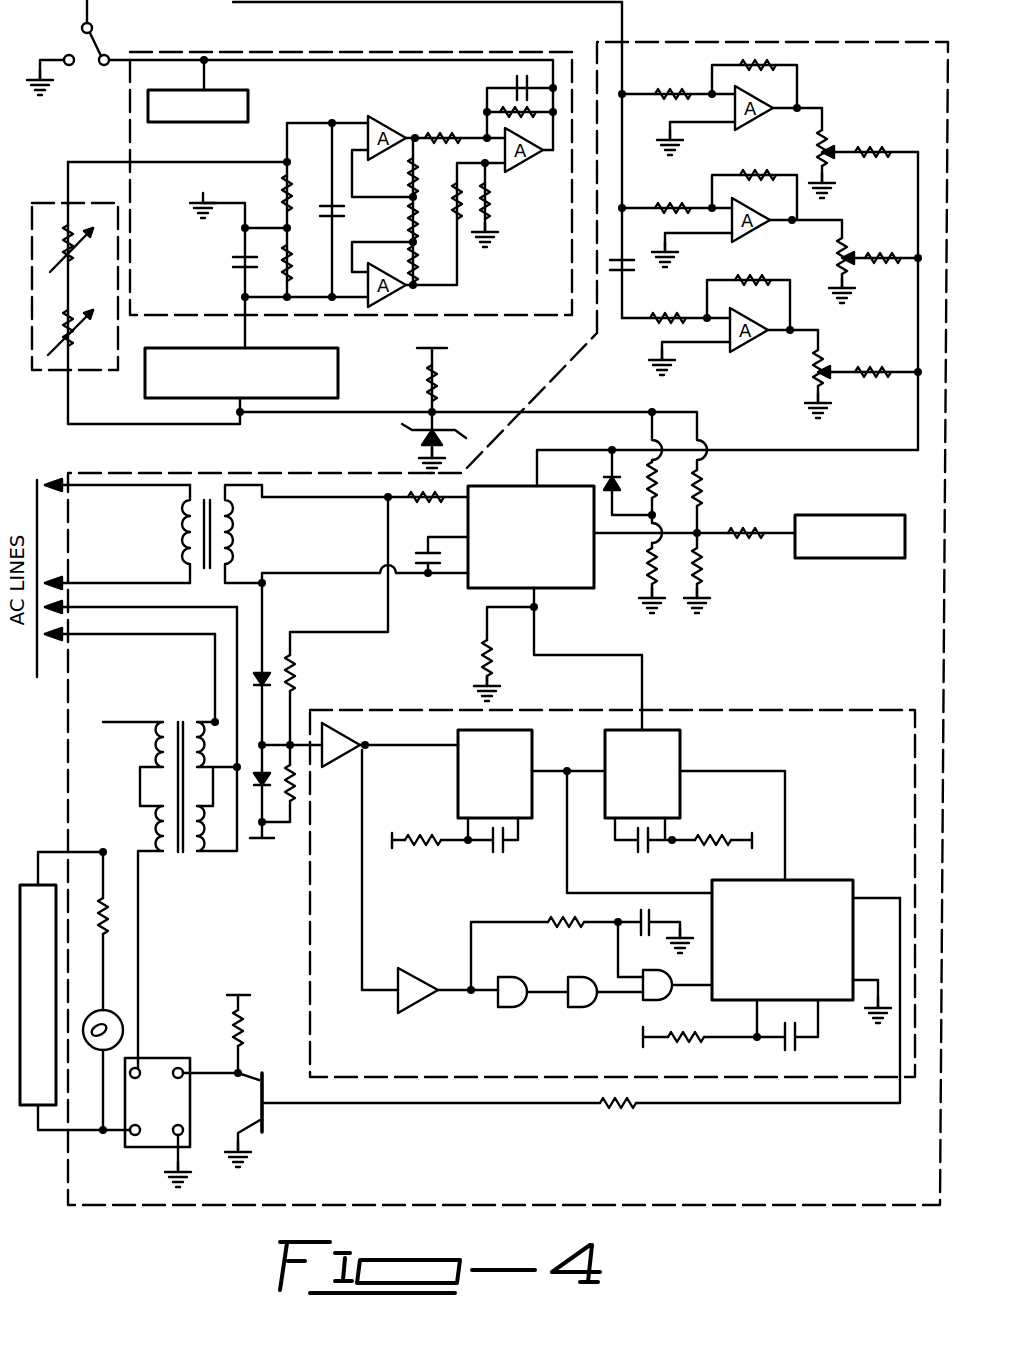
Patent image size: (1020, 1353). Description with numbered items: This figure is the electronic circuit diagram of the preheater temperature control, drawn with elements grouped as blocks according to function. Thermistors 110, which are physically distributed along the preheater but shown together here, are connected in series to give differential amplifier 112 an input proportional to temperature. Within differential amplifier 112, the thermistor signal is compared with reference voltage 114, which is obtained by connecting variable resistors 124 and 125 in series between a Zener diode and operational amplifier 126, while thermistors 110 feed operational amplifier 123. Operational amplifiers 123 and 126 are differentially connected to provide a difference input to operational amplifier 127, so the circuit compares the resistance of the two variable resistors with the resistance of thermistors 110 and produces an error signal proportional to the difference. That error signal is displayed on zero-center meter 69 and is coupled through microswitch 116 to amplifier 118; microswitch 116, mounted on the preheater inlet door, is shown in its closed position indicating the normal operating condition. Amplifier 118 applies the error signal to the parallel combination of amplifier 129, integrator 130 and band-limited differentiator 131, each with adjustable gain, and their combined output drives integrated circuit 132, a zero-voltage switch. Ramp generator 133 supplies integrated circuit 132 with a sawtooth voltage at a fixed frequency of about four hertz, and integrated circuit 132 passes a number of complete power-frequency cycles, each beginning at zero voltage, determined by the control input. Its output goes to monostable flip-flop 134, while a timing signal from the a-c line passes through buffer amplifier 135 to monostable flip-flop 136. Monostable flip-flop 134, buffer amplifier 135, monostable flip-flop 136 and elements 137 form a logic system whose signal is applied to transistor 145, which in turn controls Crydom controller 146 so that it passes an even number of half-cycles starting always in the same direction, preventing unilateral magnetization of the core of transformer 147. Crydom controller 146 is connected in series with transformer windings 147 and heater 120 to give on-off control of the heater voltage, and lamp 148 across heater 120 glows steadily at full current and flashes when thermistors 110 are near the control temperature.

The microswitch 116 is at (98, 50).
The differential amplifier 112 is at (373, 55).
The zero-center meter 69 is at (245, 101).
The reference voltage 114 is at (143, 274).
The variable resistor 125 is at (46, 206).
The variable resistor 124 is at (85, 340).
The operational amplifier 126 is at (386, 127).
The operational amplifier 127 is at (516, 164).
The operational amplifier 123 is at (395, 287).
The thermistors 110 is at (330, 363).
The amplifier 118 is at (826, 52).
The amplifier 129 is at (770, 93).
The integrator 130 is at (727, 192).
The band-limited differentiator 131 is at (728, 302).
The ramp generator 133 is at (830, 526).
The integrated circuit 132 is at (490, 577).
The buffer amplifier 135 is at (346, 746).
The monostable flip-flop 136 is at (520, 746).
The monostable flip-flop 134 is at (670, 746).
The elements 137 is at (753, 982).
The transformer windings 147 is at (192, 798).
The heater 120 is at (36, 883).
The lamp 148 is at (112, 1023).
The Crydom controller 146 is at (147, 1090).
The transistor 145 is at (250, 1117).